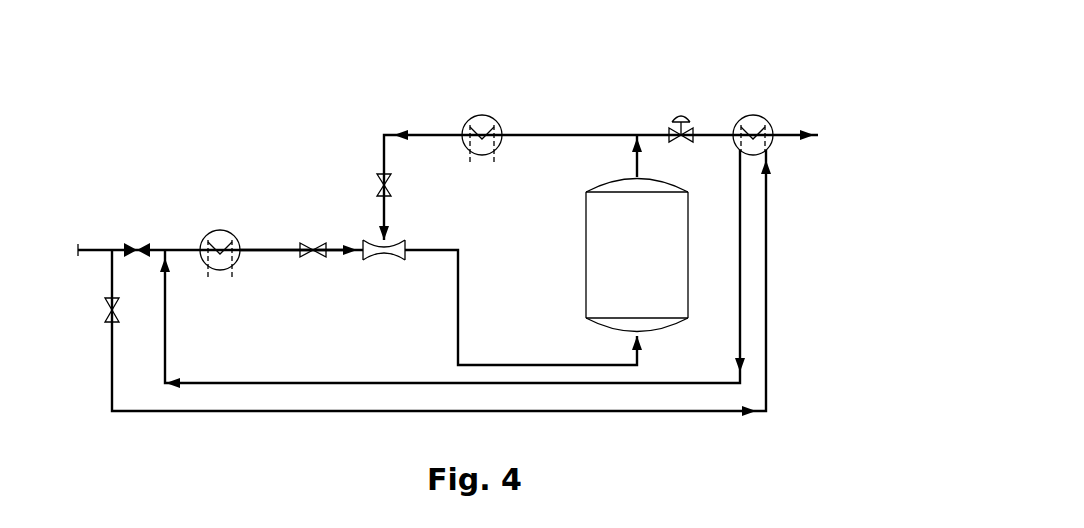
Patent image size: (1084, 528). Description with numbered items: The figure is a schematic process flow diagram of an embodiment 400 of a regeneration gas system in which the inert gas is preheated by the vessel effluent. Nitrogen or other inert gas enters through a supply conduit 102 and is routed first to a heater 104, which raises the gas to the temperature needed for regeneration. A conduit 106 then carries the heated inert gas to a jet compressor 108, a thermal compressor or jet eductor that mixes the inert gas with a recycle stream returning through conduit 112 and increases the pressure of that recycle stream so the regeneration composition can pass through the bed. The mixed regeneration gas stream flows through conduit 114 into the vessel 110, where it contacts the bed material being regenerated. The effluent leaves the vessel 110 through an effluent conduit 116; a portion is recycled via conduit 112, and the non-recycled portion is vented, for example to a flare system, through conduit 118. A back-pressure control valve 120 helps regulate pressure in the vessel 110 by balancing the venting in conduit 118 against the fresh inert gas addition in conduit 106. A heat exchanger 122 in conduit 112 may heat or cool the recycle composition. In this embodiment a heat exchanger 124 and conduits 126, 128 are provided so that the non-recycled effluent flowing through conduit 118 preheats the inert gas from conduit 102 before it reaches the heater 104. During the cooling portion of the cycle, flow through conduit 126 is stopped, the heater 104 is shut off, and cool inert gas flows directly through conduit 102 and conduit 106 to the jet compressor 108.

The embodiment 400 is at (278, 144).
The supply conduit 102 is at (86, 247).
The heater 104 is at (225, 230).
The conduit 106 is at (272, 248).
The jet compressor 108 is at (395, 262).
The vessel 110 is at (658, 268).
The conduit 112 is at (566, 134).
The conduit 114 is at (462, 300).
The effluent conduit 116 is at (636, 172).
The conduit 118 is at (788, 133).
The back-pressure control valve 120 is at (676, 117).
The heat exchanger 122 is at (470, 118).
The heat exchanger 124 is at (745, 120).
The conduit 126 is at (150, 413).
The conduit 128 is at (166, 350).